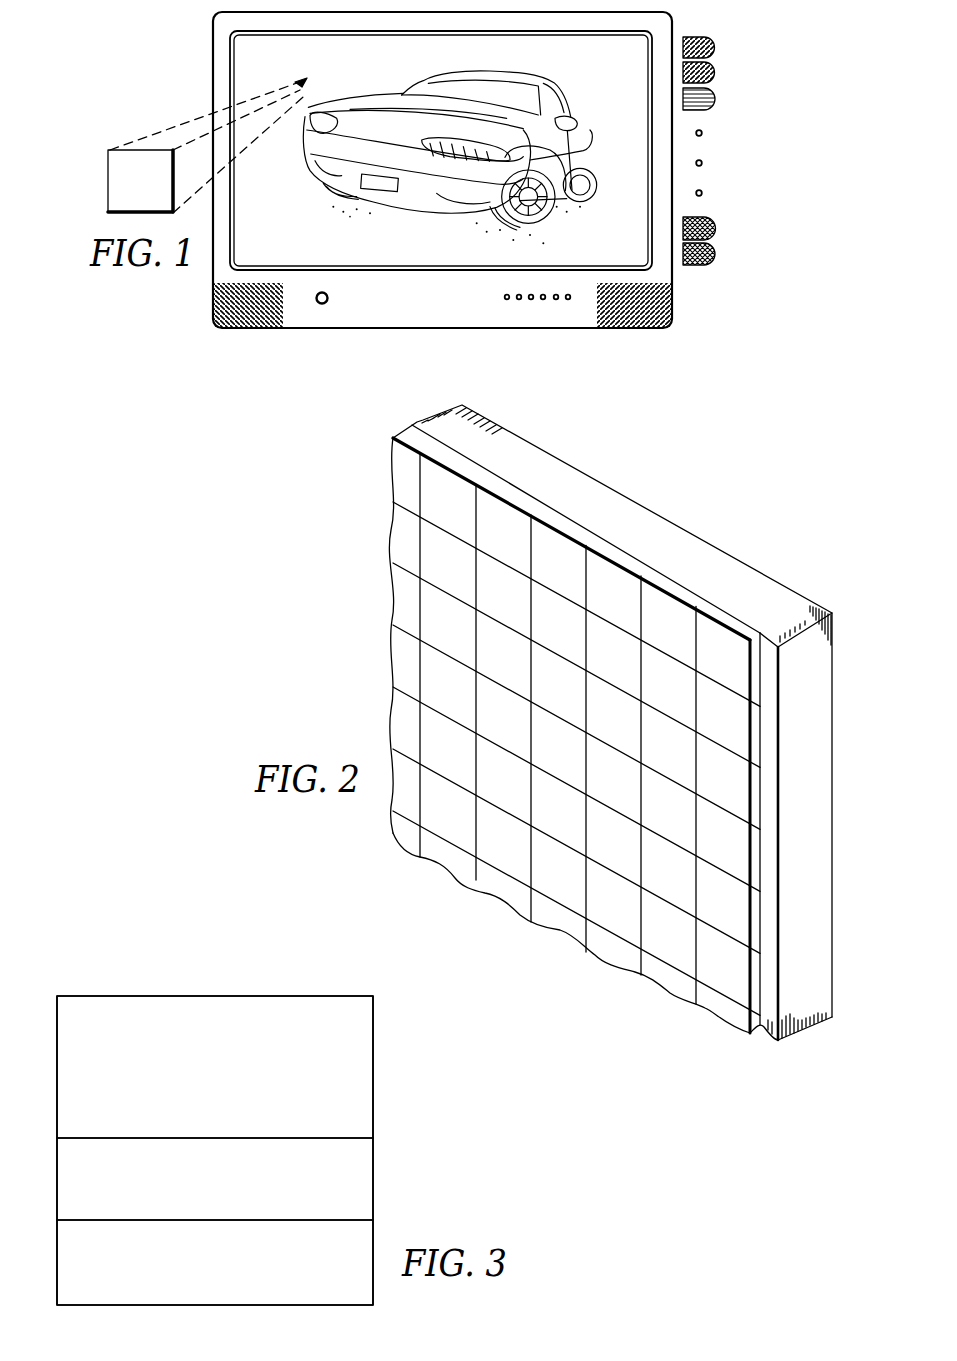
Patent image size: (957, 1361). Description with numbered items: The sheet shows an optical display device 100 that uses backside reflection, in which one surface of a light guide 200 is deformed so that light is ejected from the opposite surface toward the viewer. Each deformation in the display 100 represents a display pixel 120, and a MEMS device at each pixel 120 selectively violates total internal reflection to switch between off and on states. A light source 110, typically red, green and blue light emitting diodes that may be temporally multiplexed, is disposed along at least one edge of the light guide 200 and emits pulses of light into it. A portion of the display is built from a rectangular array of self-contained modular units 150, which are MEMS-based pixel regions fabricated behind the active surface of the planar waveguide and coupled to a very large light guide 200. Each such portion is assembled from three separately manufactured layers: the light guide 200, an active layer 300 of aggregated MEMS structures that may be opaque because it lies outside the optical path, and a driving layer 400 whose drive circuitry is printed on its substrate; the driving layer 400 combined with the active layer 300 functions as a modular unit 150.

In FIG. 1, the optical display device 100 is at (213, 58).
In FIG. 1, the light source 110 is at (700, 267).
In FIG. 2, the light source 110 is at (823, 739).
In FIG. 1, the display pixel 120 is at (108, 181).
In FIG. 2, the self-contained modular unit 150 is at (400, 542).
In FIG. 3, the self-contained modular unit 150 is at (405, 1083).
In FIG. 2, the light guide 200 is at (628, 507).
In FIG. 3, the light guide 200 is at (232, 1082).
In FIG. 3, the active layer 300 is at (232, 1192).
In FIG. 3, the driving layer 400 is at (232, 1274).